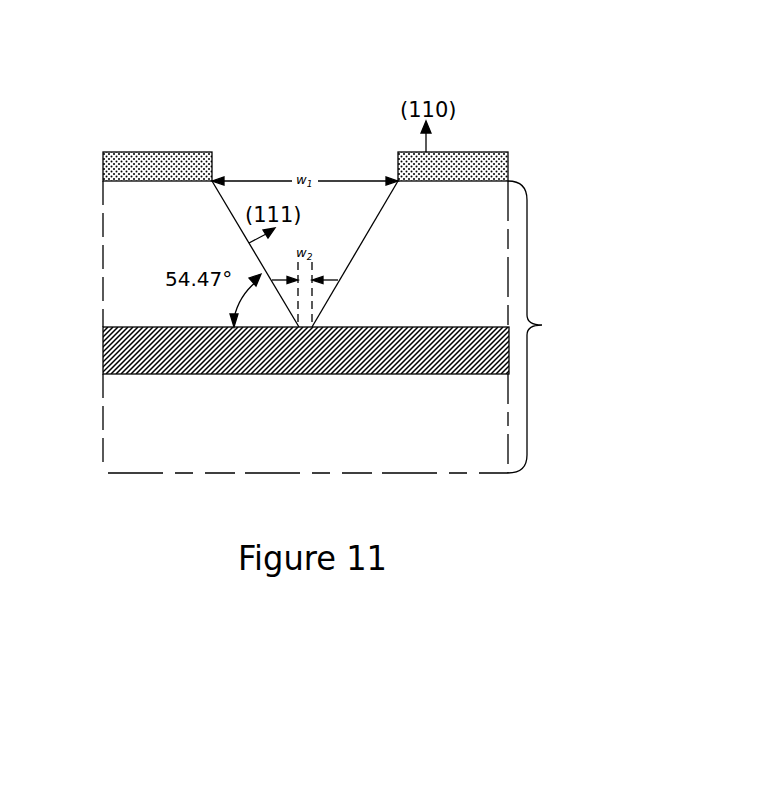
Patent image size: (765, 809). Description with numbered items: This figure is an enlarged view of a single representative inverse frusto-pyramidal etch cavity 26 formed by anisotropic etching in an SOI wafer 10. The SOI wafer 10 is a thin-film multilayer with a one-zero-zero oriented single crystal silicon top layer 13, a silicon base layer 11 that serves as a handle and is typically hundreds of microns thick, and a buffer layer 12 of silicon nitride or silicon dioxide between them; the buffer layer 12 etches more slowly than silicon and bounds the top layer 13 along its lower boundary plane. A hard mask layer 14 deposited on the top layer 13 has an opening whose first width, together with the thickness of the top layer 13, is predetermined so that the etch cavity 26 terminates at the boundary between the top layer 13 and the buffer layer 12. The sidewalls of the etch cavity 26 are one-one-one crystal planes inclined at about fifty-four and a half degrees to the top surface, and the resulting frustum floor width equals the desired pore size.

The SOI wafer 10 is at (546, 327).
The silicon base layer 11 is at (105, 434).
The buffer layer 12 is at (103, 347).
The single crystal silicon top layer 13 is at (102, 250).
The hard mask layer 14 is at (508, 163).
The inverse frusto-pyramidal etch cavity 26 is at (258, 170).